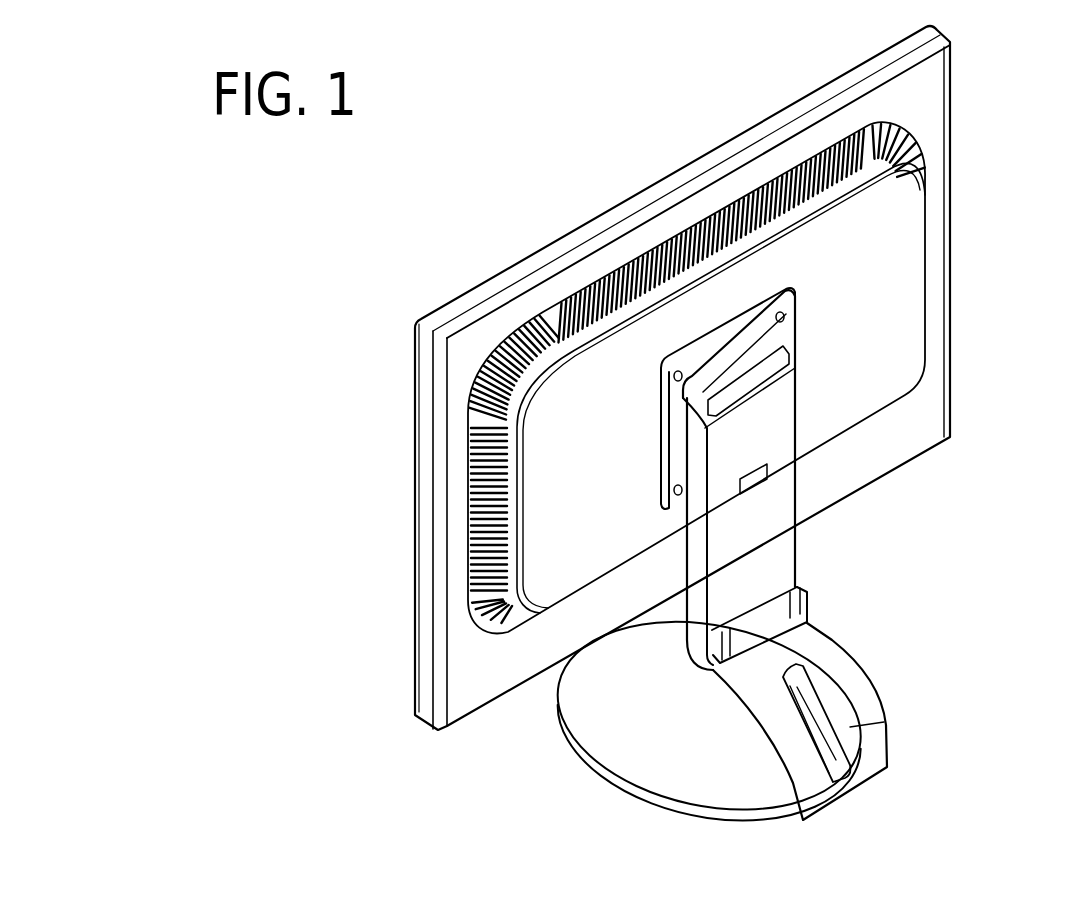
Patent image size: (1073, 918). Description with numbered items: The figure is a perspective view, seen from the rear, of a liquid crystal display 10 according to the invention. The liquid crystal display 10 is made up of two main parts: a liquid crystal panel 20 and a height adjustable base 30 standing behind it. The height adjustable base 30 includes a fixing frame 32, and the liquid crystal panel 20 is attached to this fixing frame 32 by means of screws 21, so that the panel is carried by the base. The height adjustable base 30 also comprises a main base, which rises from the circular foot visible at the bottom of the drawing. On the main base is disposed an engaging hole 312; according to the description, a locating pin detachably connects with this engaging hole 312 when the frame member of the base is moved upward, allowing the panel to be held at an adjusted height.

The liquid crystal display 10 is at (272, 801).
The liquid crystal panel 20 is at (463, 647).
The screws 21 is at (662, 375).
The fixing frame 32 is at (752, 313).
The height adjustable base 30 is at (762, 567).
The engaging hole 312 is at (750, 438).